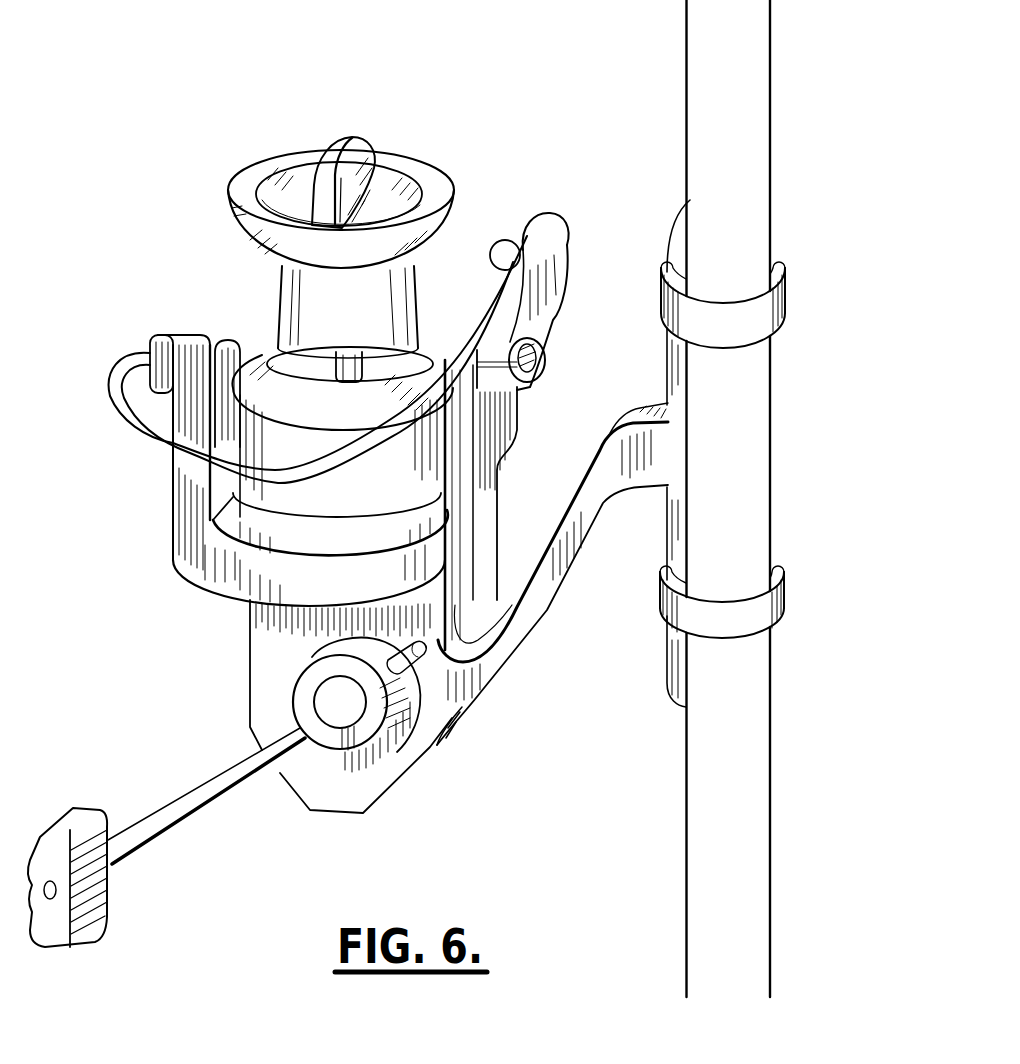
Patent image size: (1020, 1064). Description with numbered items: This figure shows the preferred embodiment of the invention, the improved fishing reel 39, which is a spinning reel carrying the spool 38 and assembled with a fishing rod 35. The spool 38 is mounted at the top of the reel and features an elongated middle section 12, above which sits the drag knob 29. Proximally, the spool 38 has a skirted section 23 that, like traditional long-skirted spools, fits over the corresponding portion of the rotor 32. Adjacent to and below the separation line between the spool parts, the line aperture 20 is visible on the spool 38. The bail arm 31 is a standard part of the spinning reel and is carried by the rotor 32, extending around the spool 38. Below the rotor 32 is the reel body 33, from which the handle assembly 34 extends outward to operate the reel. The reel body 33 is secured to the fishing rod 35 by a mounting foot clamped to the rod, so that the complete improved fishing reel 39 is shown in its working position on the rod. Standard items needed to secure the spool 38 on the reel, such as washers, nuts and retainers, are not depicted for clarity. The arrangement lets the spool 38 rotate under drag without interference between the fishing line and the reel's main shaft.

The middle section of spool 12 is at (354, 323).
The line aperture 20 is at (347, 372).
The skirted section of spool 23 is at (356, 498).
The drag knob 29 is at (325, 182).
The bail arm 31 is at (110, 396).
The rotor 32 is at (190, 539).
The reel body 33 is at (270, 677).
The handle assembly 34 is at (218, 780).
The fishing rod 35 is at (665, 78).
The spool 38 is at (270, 322).
The improved fishing reel 39 is at (222, 599).